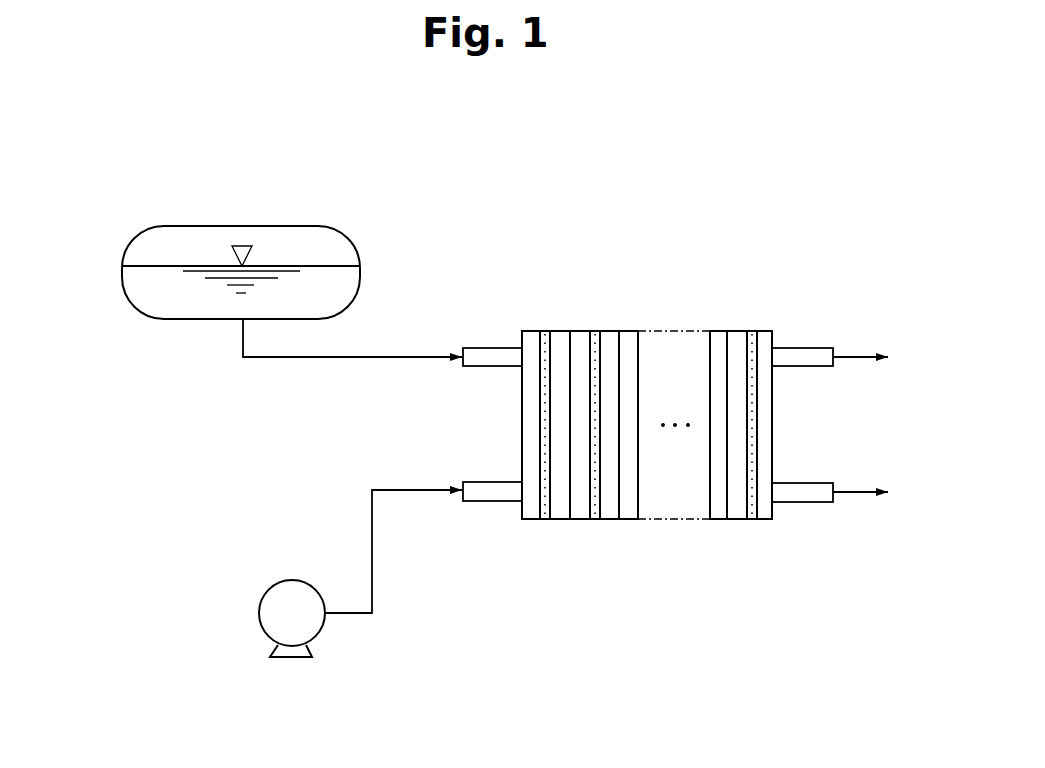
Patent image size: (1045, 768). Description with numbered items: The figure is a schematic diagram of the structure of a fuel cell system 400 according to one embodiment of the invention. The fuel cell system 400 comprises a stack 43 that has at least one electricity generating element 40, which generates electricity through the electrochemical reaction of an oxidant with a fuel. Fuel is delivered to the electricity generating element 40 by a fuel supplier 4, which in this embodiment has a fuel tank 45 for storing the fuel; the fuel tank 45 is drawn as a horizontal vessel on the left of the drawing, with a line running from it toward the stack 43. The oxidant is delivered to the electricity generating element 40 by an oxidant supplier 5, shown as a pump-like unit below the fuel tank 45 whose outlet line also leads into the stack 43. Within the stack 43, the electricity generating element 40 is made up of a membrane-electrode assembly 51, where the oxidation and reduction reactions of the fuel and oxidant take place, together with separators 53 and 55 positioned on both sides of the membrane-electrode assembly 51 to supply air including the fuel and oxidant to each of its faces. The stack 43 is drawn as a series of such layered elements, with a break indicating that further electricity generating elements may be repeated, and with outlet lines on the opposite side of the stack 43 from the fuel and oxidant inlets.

The fuel cell system 400 is at (753, 163).
The fuel supplier 4 is at (102, 277).
The fuel tank 45 is at (230, 226).
The oxidant supplier 5 is at (262, 592).
The stack 43 is at (707, 320).
The electricity generating element 40 is at (627, 617).
The separator 53 is at (577, 519).
The membrane-electrode assembly 51 is at (593, 519).
The separator 55 is at (605, 519).